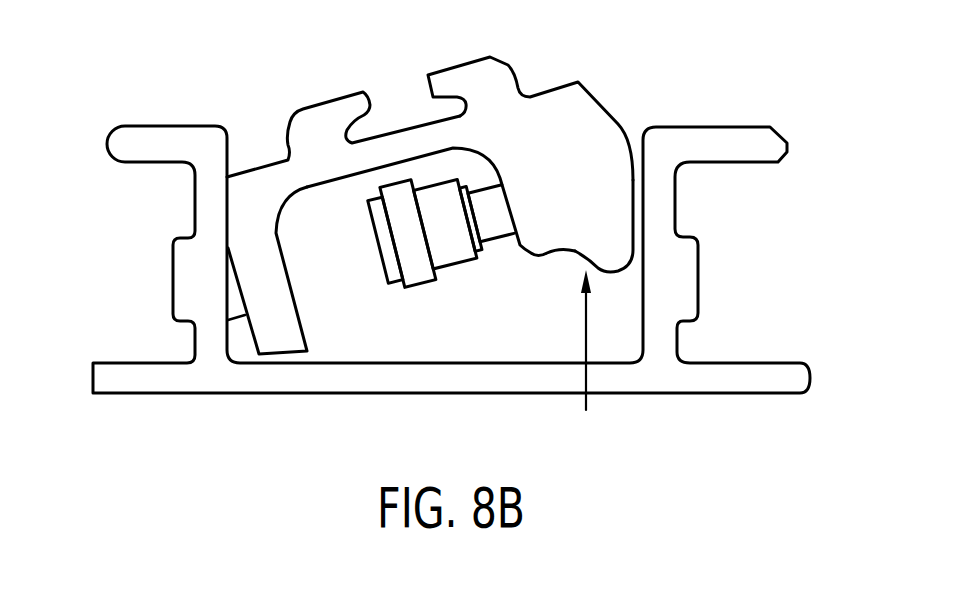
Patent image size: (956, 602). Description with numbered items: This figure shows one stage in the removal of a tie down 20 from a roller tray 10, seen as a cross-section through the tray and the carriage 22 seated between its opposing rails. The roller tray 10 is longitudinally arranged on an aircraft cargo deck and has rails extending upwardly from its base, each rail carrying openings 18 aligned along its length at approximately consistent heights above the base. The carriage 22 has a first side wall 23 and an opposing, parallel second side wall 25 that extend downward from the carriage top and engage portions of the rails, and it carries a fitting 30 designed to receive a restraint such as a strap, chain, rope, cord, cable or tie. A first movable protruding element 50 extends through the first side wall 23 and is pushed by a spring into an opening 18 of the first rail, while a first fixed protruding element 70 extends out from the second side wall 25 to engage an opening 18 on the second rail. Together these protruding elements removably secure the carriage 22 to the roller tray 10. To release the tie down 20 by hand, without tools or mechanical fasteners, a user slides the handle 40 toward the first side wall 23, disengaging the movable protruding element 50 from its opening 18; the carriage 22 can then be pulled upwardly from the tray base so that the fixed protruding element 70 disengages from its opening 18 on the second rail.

The roller tray 10 is at (451, 218).
The openings 18 is at (160, 274).
The tie down 20 is at (403, 230).
The carriage 22 is at (538, 106).
The first side wall 23 is at (597, 141).
The second side wall 25 is at (270, 342).
The fitting 30 is at (315, 115).
The handle 40 is at (417, 270).
The first movable protruding element 50 is at (461, 255).
The first fixed protruding element 70 is at (237, 300).